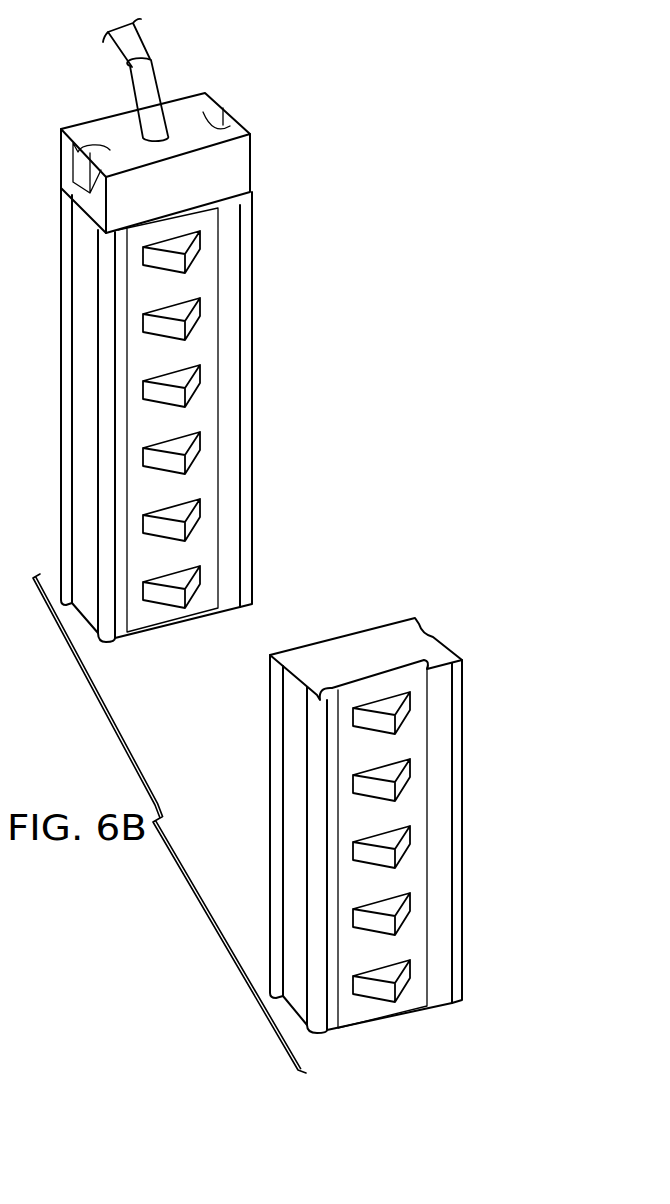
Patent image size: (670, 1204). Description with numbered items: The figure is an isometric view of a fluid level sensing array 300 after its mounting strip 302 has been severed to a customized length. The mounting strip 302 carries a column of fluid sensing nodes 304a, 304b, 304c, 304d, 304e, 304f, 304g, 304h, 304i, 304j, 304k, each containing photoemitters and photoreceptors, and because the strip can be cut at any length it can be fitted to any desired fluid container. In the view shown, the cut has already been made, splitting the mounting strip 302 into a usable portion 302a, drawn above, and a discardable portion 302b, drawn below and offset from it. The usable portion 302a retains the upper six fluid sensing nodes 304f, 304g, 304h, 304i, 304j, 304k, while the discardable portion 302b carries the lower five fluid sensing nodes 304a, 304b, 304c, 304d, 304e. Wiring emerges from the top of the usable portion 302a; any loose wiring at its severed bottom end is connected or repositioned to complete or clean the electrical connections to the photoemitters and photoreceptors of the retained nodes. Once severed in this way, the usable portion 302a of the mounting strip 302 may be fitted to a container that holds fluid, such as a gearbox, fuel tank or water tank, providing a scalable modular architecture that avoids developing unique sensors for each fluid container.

The fluid level sensing array 300 is at (357, 93).
The mounting strip 302 is at (253, 209).
The usable portion 302a is at (155, 126).
The discardable portion 302b is at (270, 748).
The fluid sensing node 304a is at (400, 984).
The fluid sensing node 304b is at (400, 917).
The fluid sensing node 304c is at (400, 850).
The fluid sensing node 304d is at (400, 783).
The fluid sensing node 304e is at (400, 716).
The fluid sensing node 304f is at (190, 589).
The fluid sensing node 304g is at (190, 522).
The fluid sensing node 304h is at (190, 455).
The fluid sensing node 304i is at (190, 388).
The fluid sensing node 304j is at (190, 321).
The fluid sensing node 304k is at (190, 254).